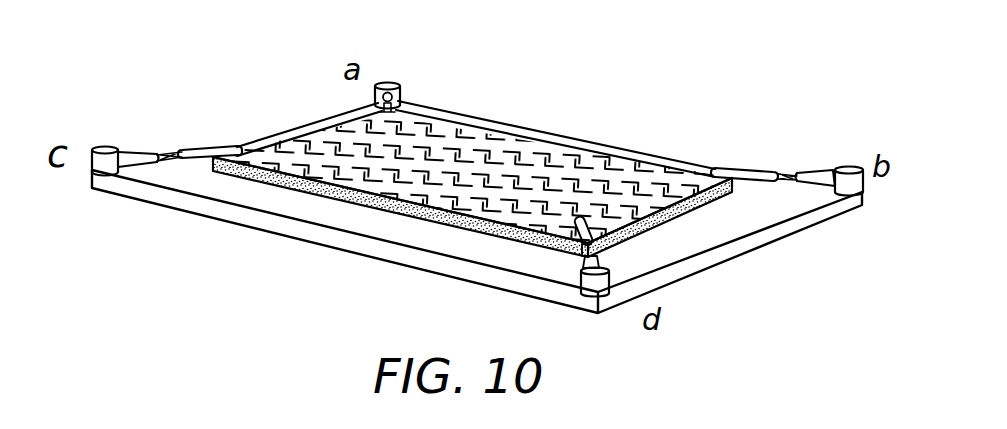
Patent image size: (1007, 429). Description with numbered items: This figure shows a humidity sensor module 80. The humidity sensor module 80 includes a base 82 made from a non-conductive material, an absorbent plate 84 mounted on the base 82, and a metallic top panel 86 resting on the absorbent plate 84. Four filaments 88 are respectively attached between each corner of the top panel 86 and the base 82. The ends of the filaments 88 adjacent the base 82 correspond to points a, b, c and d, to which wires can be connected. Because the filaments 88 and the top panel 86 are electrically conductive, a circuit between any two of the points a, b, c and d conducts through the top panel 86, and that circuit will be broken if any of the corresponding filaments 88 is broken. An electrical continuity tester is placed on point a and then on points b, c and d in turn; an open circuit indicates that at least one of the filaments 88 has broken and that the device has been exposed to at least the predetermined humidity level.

The humidity sensor module 80 is at (666, 99).
The base 82 is at (292, 230).
The absorbent plate 84 is at (663, 217).
The metallic top panel 86 is at (510, 153).
The filaments 88 is at (140, 163).